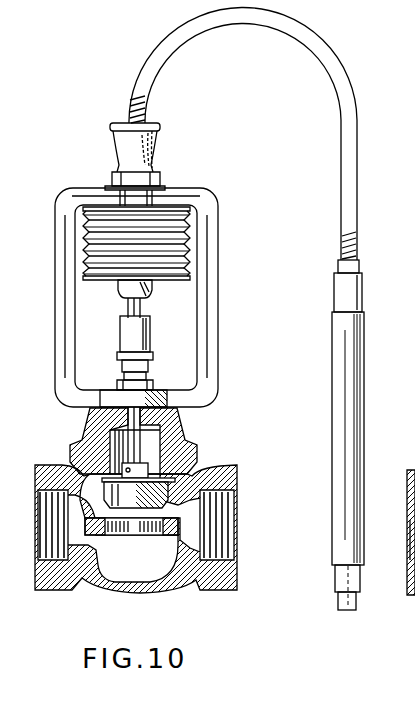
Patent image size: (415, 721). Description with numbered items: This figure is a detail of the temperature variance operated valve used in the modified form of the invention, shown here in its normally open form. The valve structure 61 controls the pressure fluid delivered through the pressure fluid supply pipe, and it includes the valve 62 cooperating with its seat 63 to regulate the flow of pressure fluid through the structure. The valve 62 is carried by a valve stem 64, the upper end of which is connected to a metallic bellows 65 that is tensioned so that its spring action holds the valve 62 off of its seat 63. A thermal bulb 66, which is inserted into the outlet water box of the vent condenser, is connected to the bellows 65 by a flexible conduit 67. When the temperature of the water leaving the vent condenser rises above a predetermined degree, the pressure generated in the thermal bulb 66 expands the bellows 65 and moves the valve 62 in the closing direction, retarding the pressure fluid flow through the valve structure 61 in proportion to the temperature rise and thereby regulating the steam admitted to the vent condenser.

The valve structure 61 is at (230, 373).
The valve 62 is at (162, 487).
The seat 63 is at (104, 538).
The valve stem 64 is at (141, 307).
The metallic bellows 65 is at (186, 236).
The thermal bulb 66 is at (342, 478).
The flexible conduit 67 is at (356, 123).